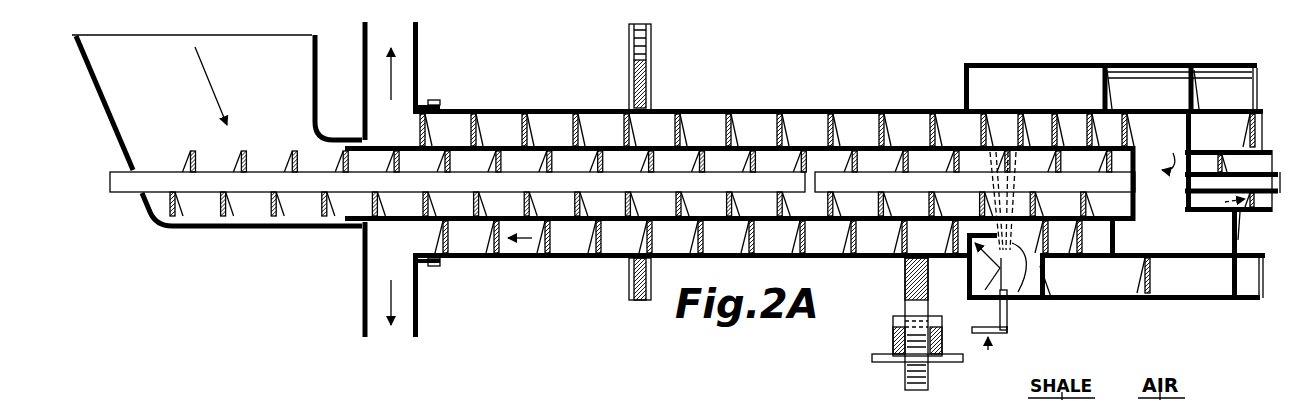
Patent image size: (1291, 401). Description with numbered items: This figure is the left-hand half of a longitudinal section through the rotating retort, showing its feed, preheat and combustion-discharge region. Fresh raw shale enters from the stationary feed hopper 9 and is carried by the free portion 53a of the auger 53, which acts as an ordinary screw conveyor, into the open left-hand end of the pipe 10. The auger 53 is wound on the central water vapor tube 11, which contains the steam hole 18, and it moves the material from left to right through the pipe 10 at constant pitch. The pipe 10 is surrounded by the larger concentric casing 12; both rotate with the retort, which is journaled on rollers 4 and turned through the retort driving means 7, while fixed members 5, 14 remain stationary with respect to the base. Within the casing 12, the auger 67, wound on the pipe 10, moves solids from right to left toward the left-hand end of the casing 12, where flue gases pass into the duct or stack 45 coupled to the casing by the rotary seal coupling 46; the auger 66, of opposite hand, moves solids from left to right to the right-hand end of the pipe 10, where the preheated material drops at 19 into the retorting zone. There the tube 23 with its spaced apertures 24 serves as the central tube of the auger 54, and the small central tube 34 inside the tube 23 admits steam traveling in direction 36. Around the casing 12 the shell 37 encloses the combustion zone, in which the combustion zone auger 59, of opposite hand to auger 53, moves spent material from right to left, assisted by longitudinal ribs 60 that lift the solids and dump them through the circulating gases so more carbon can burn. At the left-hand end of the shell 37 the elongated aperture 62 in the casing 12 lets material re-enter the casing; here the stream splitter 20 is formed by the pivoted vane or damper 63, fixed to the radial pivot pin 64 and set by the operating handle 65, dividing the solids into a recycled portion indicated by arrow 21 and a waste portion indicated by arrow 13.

The rollers 4 is at (905, 272).
The stationary member 5 is at (893, 336).
The retort driving means 7 is at (648, 58).
The feed hopper 9 is at (104, 119).
The pipe 10 is at (746, 147).
The water vapor tube 11 is at (127, 191).
The casing 12 is at (668, 110).
The waste stream arrow 13 is at (530, 238).
The stationary member 14 is at (402, 400).
The steam hole 18 is at (830, 95).
The drop point 19 is at (1182, 222).
The stream splitter 20 is at (989, 355).
The recycle stream arrow 21 is at (1050, 300).
The tube 23 is at (1278, 147).
The apertures 24 is at (1200, 147).
The central tube 34 is at (1279, 195).
The steam direction 36 is at (1198, 182).
The shell 37 is at (1188, 68).
The duct or stack 45 is at (421, 42).
The rotary seal coupling 46 is at (438, 96).
The auger 53 is at (457, 157).
The free portion of auger 53a is at (221, 217).
The auger 54 is at (1237, 235).
The combustion zone auger 59 is at (1150, 285).
The ribs 60 is at (1147, 72).
The aperture 62 is at (1022, 292).
The vane or damper 63 is at (969, 292).
The pivot pin 64 is at (1000, 290).
The operating handle 65 is at (1008, 328).
The auger 66 is at (1073, 97).
The auger 67 is at (840, 125).